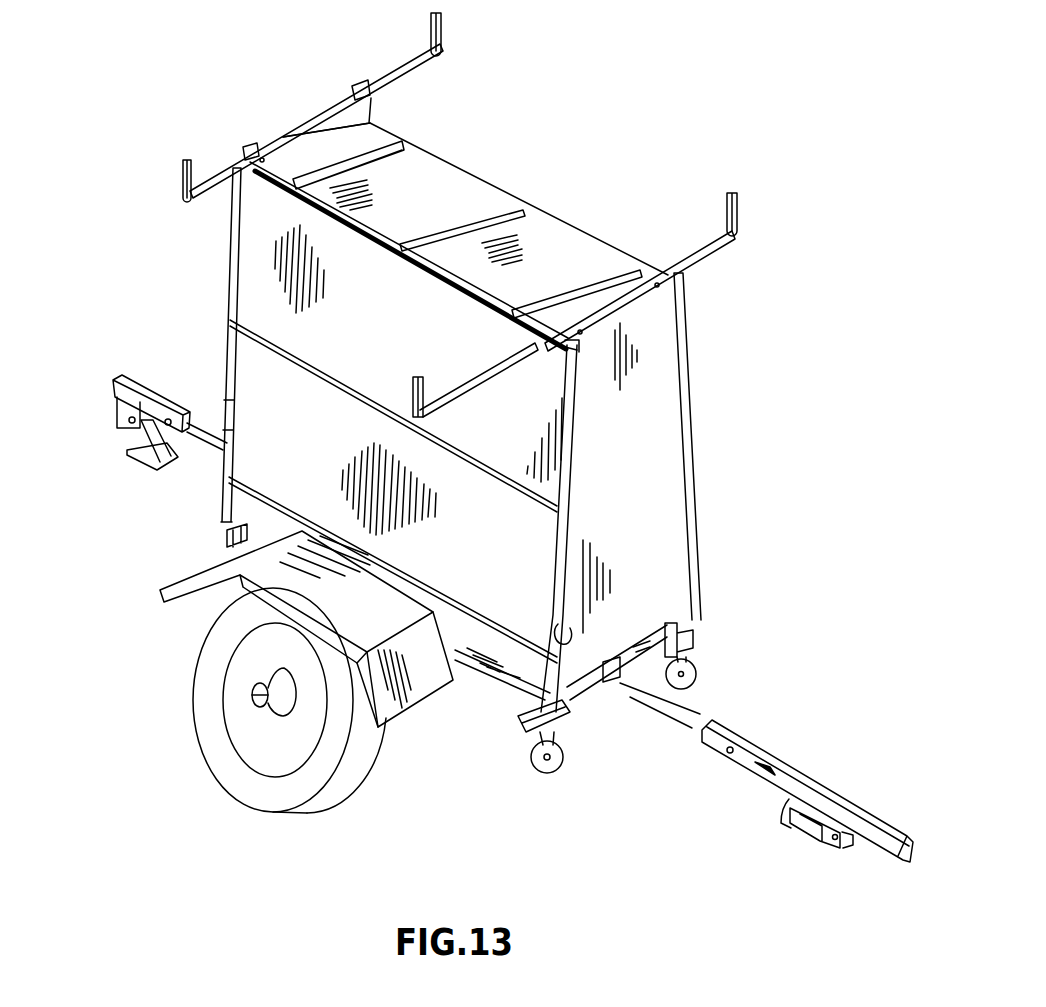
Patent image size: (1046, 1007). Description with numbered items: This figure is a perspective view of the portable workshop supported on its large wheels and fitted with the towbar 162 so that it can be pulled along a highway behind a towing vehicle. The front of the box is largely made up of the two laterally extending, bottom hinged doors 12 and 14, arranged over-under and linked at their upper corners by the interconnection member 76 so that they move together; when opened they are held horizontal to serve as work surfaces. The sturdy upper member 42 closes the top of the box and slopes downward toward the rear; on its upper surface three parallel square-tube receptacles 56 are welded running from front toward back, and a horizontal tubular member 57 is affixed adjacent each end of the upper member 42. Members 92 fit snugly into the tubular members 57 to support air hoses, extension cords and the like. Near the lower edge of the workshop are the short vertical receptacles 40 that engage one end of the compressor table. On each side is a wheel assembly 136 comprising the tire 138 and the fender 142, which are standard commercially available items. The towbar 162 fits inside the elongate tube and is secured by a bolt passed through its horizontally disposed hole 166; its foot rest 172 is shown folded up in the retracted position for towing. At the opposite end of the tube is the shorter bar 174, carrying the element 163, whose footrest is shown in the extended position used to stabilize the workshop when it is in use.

The bottom hinged door 12 is at (527, 520).
The bottom hinged door 14 is at (533, 380).
The short vertical receptacles 40 is at (697, 667).
The upper member 42 is at (428, 188).
The receptacles 56 is at (605, 277).
The tubular member 57 is at (320, 125).
The interconnection member 76 is at (225, 362).
The members 92 is at (217, 178).
The wheel assembly 136 is at (362, 605).
The tire 138 is at (205, 637).
The fender 142 is at (425, 653).
The towbar 162 is at (792, 782).
The side jack 163 is at (118, 382).
The hole 166 is at (730, 753).
The foot rest 172 is at (133, 463).
The bar 174 is at (157, 403).